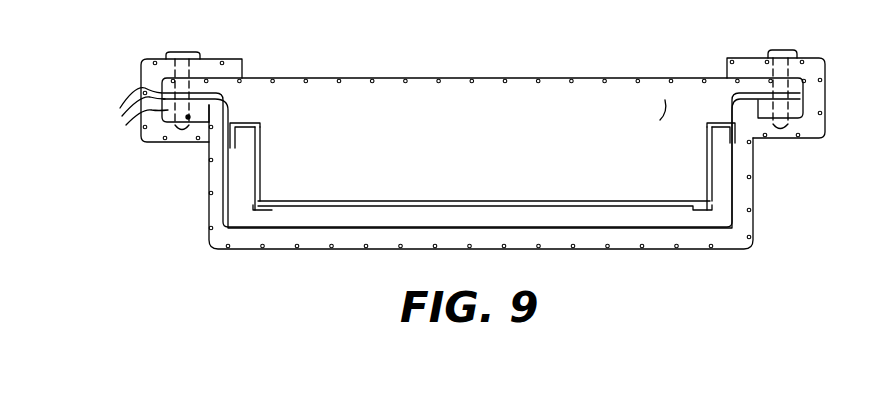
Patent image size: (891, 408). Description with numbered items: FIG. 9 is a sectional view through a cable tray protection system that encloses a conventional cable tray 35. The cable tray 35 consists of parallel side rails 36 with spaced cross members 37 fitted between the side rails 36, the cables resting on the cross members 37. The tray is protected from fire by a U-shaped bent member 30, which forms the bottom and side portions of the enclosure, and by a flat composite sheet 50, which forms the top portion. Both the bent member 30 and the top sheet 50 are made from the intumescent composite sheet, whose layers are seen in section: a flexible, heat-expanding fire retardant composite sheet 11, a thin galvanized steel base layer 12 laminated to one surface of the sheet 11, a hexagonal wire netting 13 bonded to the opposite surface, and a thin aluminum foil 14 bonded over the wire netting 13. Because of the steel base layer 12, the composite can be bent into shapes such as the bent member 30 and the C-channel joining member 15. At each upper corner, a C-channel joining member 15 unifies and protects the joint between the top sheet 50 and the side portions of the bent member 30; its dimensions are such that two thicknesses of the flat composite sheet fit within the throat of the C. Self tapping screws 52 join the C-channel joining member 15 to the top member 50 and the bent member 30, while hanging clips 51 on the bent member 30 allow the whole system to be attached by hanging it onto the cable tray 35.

The fire retardant composite sheet 11 is at (695, 78).
The galvanized steel base layer 12 is at (375, 110).
The hexagonal wire netting 13 is at (224, 61).
The aluminum foil 14 is at (142, 66).
The C-channel joining member 15 is at (143, 146).
The U-shaped bent member 30 is at (207, 253).
The cable tray 35 is at (482, 165).
The side rails 36 is at (261, 168).
The cross members 37 is at (358, 197).
The flat composite sheet 50 is at (553, 72).
The hanging clips 51 is at (262, 128).
The self tapping screws 52 is at (193, 50).